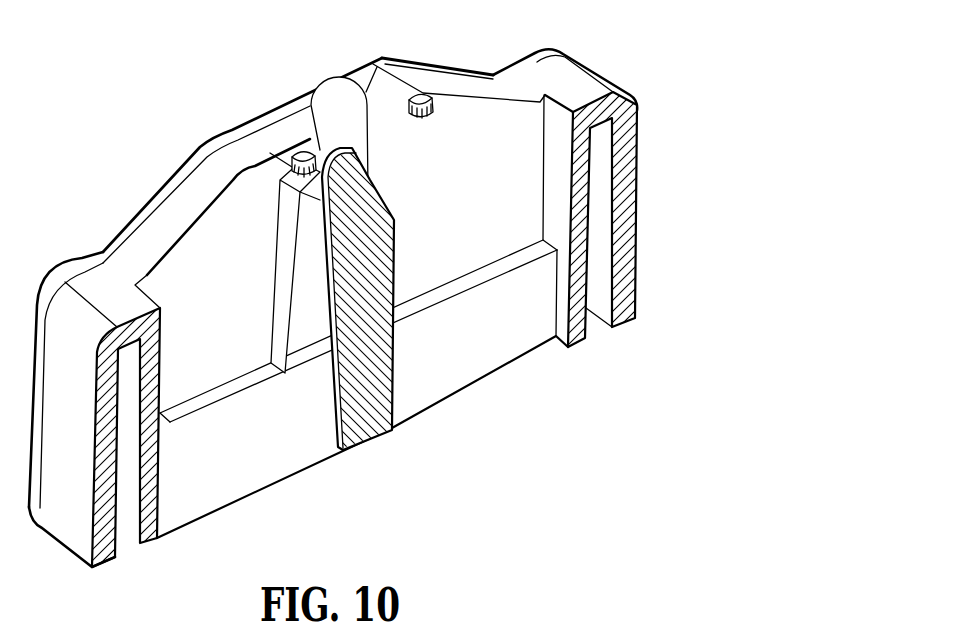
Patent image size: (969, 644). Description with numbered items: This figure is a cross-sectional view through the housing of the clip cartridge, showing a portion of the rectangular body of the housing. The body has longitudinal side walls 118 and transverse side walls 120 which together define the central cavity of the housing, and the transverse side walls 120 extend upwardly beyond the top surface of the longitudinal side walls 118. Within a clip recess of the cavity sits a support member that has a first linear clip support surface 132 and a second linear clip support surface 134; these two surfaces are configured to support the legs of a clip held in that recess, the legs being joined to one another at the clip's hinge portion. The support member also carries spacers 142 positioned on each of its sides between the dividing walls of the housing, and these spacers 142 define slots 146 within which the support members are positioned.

The longitudinal side wall 118 is at (588, 100).
The transverse side wall 120 is at (247, 145).
The first linear clip support surface 132 is at (335, 167).
The second linear clip support surface 134 is at (372, 192).
The spacer 142 is at (347, 103).
The slot 146 is at (348, 123).